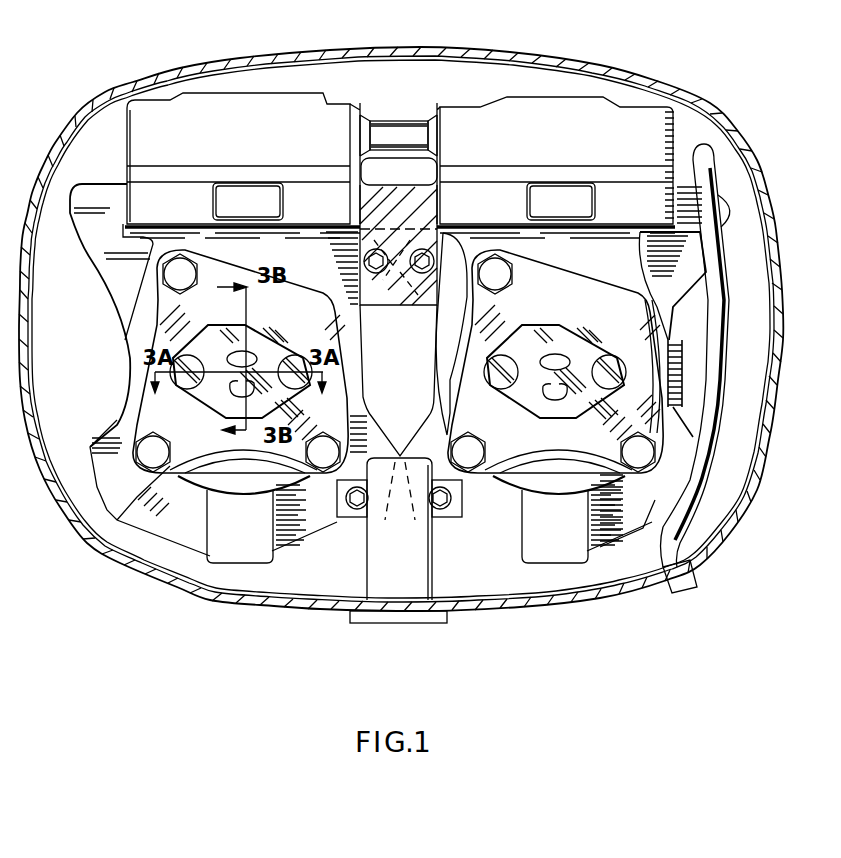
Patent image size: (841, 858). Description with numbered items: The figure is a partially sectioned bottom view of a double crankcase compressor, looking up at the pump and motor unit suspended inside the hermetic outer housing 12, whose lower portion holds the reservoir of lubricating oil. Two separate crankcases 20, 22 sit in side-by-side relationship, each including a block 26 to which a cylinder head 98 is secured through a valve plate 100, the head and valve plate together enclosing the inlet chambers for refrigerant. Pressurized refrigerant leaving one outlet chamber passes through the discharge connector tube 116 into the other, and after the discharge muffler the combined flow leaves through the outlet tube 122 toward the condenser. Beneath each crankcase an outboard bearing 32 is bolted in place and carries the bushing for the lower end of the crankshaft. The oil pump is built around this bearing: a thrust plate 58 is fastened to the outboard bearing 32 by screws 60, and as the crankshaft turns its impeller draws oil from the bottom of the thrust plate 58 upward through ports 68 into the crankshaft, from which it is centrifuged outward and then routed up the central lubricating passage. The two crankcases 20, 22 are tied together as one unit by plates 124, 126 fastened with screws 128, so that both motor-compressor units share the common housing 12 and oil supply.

The outer housing 12 is at (651, 80).
The crankcase 20 is at (120, 517).
The crankcase 22 is at (655, 490).
The block 26 is at (125, 203).
The outboard bearing 32 is at (215, 446).
The thrust plate 58 is at (150, 407).
The screws 60 is at (290, 350).
The ports 68 is at (230, 393).
The cylinder head 98 is at (213, 113).
The valve plate 100 is at (253, 171).
The discharge connector tube 116 is at (396, 128).
The outlet tube 122 is at (677, 592).
The plate 124 is at (440, 206).
The plate 126 is at (450, 517).
The screws 128 is at (378, 272).